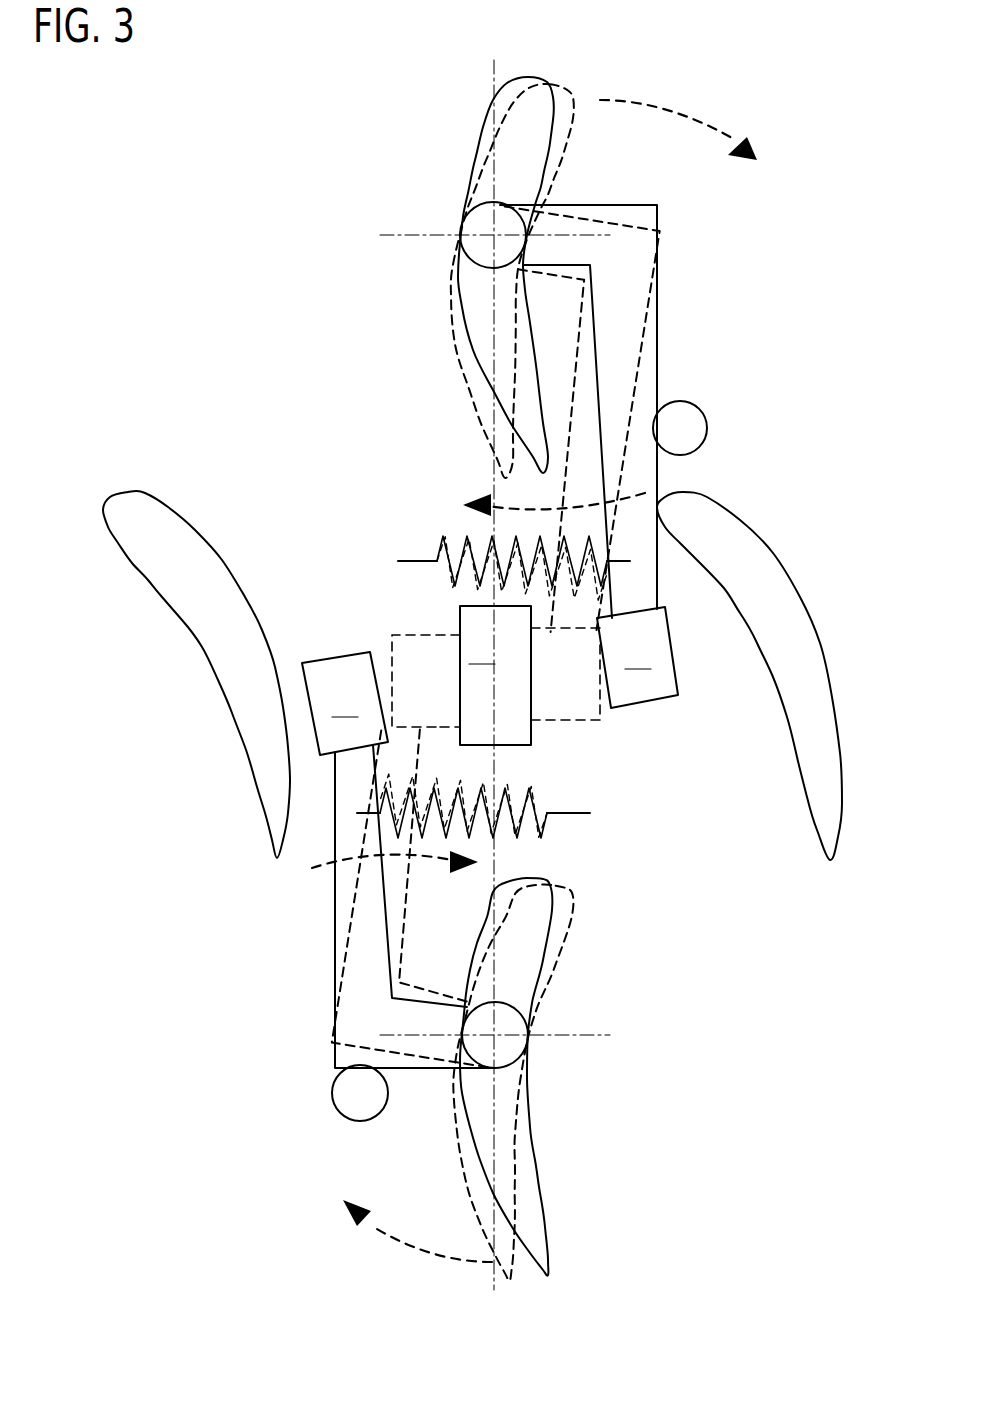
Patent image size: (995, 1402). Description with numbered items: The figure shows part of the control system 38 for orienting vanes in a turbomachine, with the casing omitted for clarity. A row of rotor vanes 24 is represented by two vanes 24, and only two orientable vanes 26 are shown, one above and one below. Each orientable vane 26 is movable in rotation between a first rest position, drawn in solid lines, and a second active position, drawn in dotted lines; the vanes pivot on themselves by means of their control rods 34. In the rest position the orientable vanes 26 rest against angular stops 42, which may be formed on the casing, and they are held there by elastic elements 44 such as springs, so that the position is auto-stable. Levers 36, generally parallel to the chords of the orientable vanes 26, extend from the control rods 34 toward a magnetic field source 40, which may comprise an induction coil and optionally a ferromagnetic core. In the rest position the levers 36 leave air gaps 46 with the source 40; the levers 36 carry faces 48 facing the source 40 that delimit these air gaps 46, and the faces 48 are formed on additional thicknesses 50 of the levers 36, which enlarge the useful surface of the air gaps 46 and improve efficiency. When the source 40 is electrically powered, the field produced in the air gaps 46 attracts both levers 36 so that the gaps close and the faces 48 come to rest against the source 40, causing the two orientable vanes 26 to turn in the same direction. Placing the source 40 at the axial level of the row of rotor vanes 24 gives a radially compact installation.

The rotor vanes 24 is at (207, 608).
The orientable vanes 26 is at (487, 128).
The control rods 34 is at (482, 220).
The levers 36 is at (645, 343).
The control system 38 is at (268, 345).
The magnetic field source 40 is at (495, 675).
The angular stops 42 is at (678, 425).
The elastic elements 44 is at (422, 560).
The air gaps 46 is at (407, 603).
The faces 48 is at (390, 655).
The additional thicknesses 50 is at (490, 681).